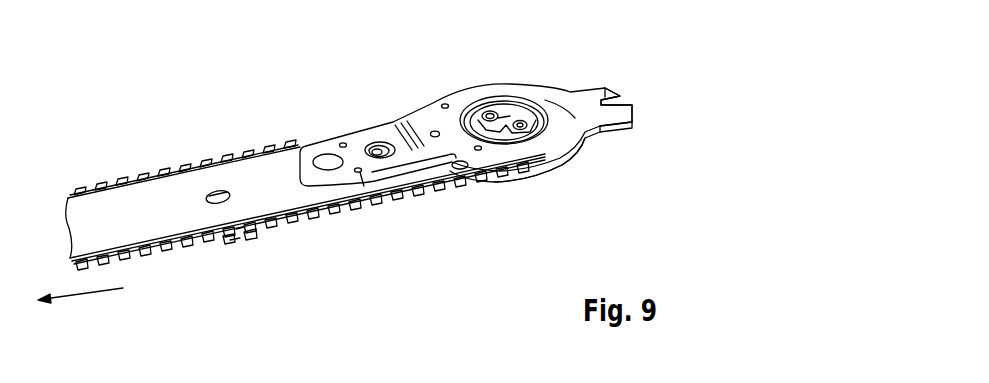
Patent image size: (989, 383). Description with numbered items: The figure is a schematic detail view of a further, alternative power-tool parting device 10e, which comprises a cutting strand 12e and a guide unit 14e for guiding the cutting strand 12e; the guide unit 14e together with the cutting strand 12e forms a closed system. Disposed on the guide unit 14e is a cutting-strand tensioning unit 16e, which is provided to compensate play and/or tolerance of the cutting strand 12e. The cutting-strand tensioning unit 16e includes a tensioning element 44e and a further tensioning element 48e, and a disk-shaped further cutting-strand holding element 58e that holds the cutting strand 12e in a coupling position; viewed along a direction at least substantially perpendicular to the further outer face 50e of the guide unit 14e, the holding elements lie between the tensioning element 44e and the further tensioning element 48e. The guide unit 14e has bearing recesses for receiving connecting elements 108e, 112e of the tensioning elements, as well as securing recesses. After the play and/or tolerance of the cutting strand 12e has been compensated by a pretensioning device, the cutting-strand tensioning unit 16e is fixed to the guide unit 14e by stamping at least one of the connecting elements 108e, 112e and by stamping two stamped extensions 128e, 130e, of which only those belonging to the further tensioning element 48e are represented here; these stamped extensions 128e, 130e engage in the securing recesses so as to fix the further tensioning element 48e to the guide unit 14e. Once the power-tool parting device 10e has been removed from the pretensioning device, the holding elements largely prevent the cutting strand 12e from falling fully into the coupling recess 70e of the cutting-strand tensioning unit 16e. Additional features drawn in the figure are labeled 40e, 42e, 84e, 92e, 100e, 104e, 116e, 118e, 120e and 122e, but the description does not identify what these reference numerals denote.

The power-tool parting device 10e is at (110, 114).
The cutting strand 12e is at (160, 248).
The guide unit 14e is at (105, 205).
The cutting-strand tensioning unit 16e is at (586, 56).
The cutting direction arrow 40e is at (78, 295).
The coupling element 42e is at (635, 89).
The tensioning element 44e is at (567, 135).
The further tensioning element 48e is at (558, 104).
The further outer face of the guide unit 50e is at (180, 184).
The further cutting-strand holding element 58e is at (528, 96).
The coupling recess 70e is at (503, 133).
The bearing boss 84e is at (377, 145).
The fastening hole 92e is at (434, 131).
The fastening hole 100e is at (479, 151).
The fastening hole 104e is at (445, 103).
The connecting element 108e is at (330, 158).
The connecting element 112e is at (358, 160).
The cutting element 116e is at (255, 239).
The chain link 118e is at (233, 238).
The chain link 120e is at (232, 232).
The chain link 122e is at (240, 232).
The stamped extension 128e is at (362, 178).
The stamped extension 130e is at (341, 143).